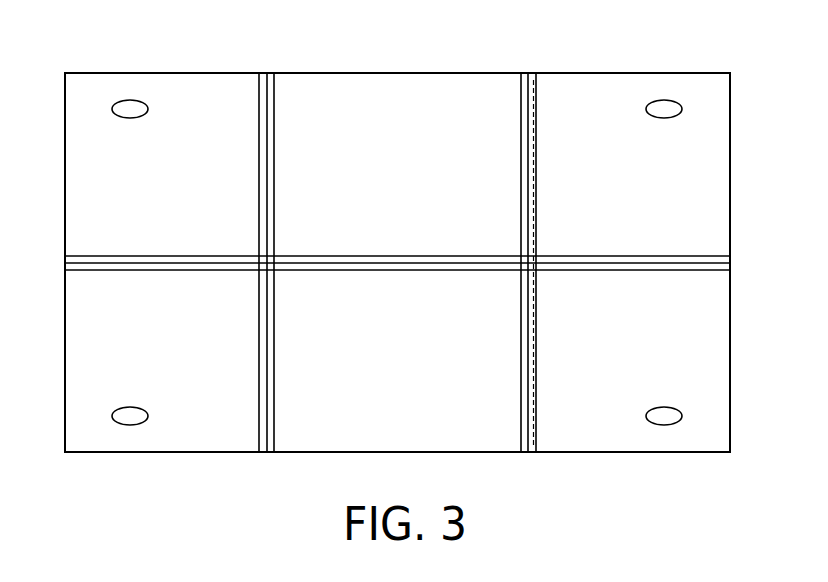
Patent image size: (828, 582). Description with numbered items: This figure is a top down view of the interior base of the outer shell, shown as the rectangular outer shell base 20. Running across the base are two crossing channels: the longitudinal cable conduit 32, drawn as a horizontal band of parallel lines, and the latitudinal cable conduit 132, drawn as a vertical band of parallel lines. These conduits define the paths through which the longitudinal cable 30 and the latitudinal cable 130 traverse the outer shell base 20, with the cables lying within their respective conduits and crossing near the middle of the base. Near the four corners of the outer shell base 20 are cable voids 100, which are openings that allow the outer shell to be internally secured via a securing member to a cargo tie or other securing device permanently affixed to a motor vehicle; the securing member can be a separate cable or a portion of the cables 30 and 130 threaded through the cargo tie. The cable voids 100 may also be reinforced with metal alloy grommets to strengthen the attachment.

The outer shell base 20 is at (412, 183).
The longitudinal cable 30 is at (731, 262).
The longitudinal cable conduit 32 is at (731, 270).
The cable voids 100 is at (664, 100).
The latitudinal cable 130 is at (267, 73).
The latitudinal cable conduit 132 is at (259, 73).